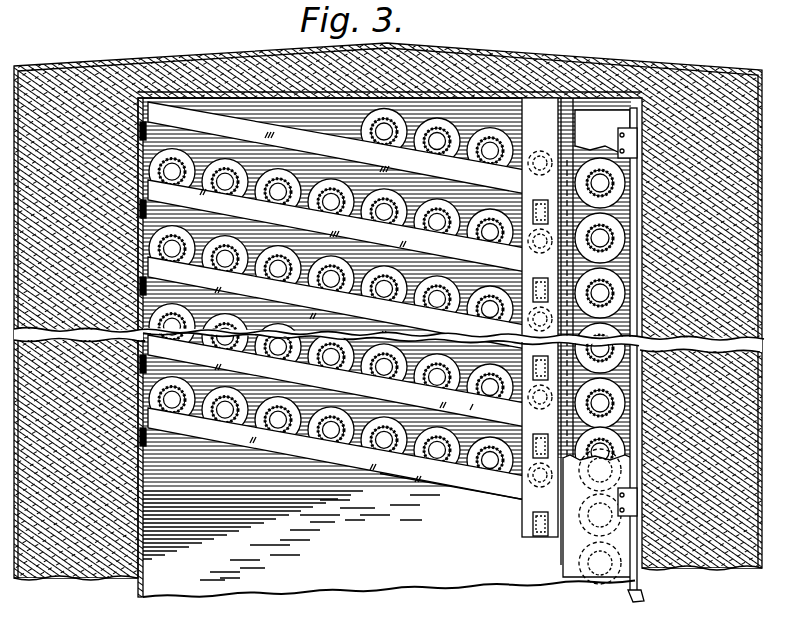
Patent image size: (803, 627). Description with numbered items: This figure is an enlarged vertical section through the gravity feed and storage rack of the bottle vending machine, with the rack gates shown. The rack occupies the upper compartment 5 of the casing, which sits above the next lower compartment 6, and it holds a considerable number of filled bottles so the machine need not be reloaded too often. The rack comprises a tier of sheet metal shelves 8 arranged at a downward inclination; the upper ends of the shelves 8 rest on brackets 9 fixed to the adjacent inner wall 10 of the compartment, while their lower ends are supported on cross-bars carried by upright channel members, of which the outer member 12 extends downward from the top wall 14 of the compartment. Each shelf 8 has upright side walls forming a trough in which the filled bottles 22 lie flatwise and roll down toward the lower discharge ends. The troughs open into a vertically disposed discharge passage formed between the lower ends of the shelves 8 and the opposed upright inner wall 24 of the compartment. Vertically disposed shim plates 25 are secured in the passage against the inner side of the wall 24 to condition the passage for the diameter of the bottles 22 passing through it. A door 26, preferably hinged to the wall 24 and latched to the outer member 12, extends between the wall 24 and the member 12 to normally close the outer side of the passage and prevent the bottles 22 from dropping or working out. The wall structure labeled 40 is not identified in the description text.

The upper compartment 5 is at (291, 535).
The compartment 6 is at (389, 604).
The sheet metal shelves 8 is at (438, 487).
The brackets 9 is at (331, 301).
The inner wall 10 is at (140, 591).
The outer upright channel member 12 is at (527, 523).
The top wall 14 is at (324, 98).
The filled bottles 22 is at (474, 444).
The upright inner wall 24 is at (646, 576).
The shim plates 25 is at (640, 597).
The door 26 is at (572, 578).
The insulated wall 40 is at (47, 73).